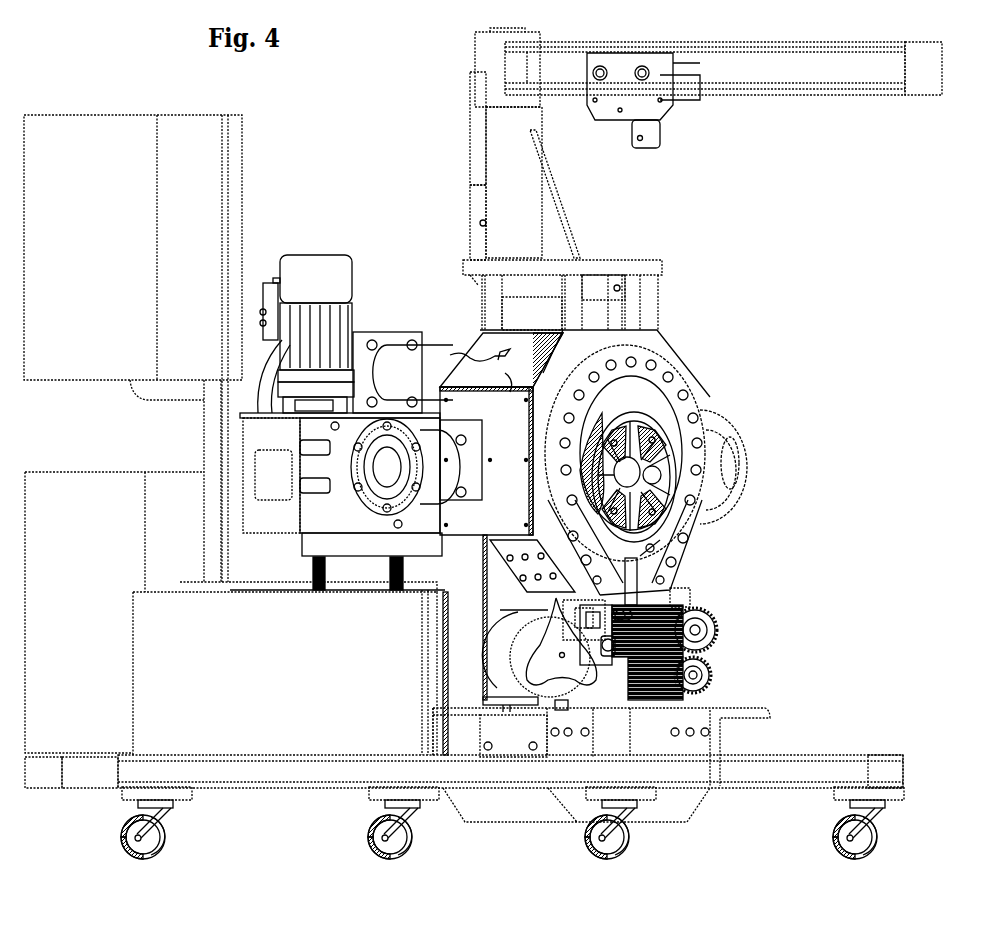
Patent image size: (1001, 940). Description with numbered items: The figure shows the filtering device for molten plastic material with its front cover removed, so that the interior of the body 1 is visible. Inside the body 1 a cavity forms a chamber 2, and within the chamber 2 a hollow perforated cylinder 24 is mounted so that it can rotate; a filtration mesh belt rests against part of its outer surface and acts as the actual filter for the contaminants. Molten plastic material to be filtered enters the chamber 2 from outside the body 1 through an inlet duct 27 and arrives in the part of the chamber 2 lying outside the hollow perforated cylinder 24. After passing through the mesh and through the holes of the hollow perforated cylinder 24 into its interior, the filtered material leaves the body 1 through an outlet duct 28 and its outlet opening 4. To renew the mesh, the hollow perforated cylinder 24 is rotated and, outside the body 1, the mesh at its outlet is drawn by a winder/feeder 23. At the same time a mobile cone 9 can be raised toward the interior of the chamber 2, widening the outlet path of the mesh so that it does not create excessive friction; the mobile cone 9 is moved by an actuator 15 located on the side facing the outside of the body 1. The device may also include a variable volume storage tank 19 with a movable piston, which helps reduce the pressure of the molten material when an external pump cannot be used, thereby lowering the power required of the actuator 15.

The body 1 is at (652, 343).
The chamber 2 is at (640, 405).
The outlet opening 4 is at (390, 470).
The mobile cone 9 is at (656, 550).
The actuator 15 is at (607, 705).
The variable volume storage tank 19 is at (437, 362).
The winder/feeder 23 is at (700, 628).
The hollow perforated cylinder 24 is at (665, 432).
The inlet duct 27 is at (725, 487).
The outlet duct 28 is at (436, 362).